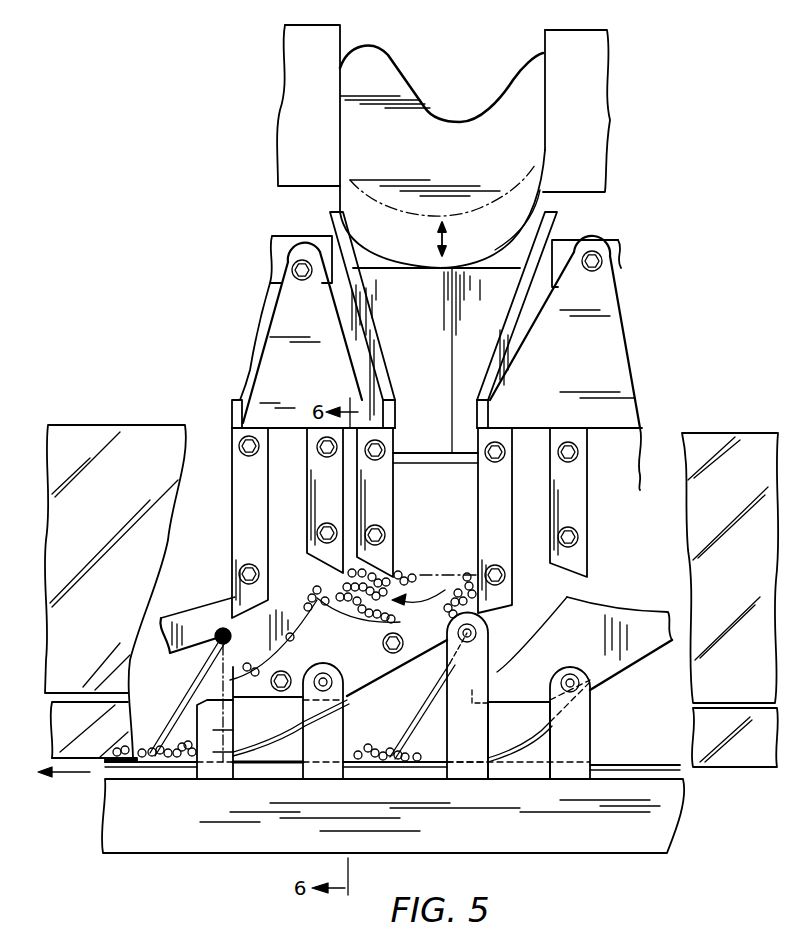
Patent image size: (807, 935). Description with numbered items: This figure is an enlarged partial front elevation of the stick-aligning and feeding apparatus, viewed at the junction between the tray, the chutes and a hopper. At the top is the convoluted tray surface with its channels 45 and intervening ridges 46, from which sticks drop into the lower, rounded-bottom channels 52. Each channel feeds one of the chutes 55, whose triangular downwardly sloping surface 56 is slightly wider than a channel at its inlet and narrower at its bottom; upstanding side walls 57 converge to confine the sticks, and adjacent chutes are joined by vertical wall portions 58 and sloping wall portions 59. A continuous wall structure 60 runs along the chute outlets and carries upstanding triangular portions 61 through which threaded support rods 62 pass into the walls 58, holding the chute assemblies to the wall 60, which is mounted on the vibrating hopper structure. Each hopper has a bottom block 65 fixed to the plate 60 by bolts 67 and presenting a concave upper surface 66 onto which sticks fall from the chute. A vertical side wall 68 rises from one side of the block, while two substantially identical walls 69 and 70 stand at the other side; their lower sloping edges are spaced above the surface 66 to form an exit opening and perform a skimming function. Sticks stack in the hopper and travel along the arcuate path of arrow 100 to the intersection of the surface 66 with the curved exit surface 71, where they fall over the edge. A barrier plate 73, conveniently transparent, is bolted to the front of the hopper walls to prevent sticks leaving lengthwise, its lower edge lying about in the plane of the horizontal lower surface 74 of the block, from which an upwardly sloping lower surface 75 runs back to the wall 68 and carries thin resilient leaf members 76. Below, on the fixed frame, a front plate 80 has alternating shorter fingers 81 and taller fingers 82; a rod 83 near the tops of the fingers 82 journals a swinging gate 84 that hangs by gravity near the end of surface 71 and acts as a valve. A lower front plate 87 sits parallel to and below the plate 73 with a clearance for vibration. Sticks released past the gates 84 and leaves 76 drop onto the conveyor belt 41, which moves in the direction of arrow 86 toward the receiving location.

The conveyor belt 41 is at (628, 765).
The channels 45 is at (468, 118).
The ridges 46 is at (393, 55).
The channels 52 is at (500, 250).
The chutes 55 is at (562, 207).
The downwardly sloping surface 56 is at (420, 321).
The upstanding side walls 57 is at (328, 218).
The vertical wall portions 58 is at (270, 237).
The downwardly sloping wall portions 59 is at (262, 305).
The continuous wall structure 60 is at (446, 518).
The upstanding generally triangular portions 61 is at (252, 357).
The threaded support rods 62 is at (225, 612).
The bottom block 65 is at (183, 653).
The concave upper surface 66 is at (648, 612).
The bolts 67 is at (384, 650).
The vertical side wall 68 is at (262, 508).
The wall 69 is at (389, 489).
The wall 70 is at (344, 491).
The exit surface 71 is at (297, 628).
The barrier plate 73 is at (148, 425).
The lower substantially horizontal surface 74 is at (272, 698).
The upwardly sloping lower surfaces 75 is at (398, 665).
The leaf members 76 is at (268, 742).
The front plate 80 is at (540, 853).
The fingers 81 is at (345, 706).
The fingers 82 is at (235, 714).
The rod 83 is at (488, 634).
The swinging gate 84 is at (182, 704).
The arrow 86 is at (66, 775).
The lower front plate 87 is at (52, 726).
The arrow 100 is at (430, 592).